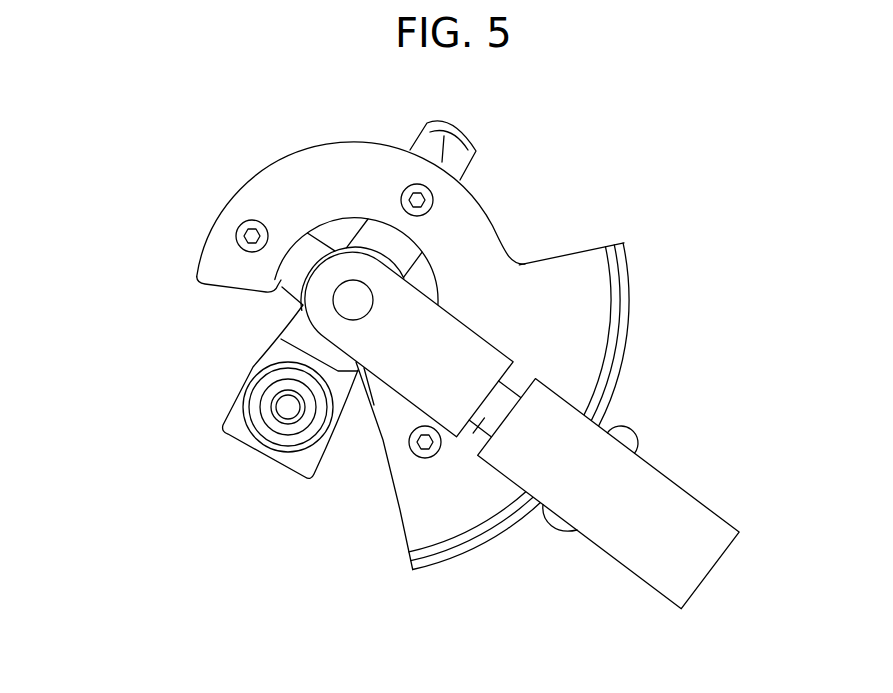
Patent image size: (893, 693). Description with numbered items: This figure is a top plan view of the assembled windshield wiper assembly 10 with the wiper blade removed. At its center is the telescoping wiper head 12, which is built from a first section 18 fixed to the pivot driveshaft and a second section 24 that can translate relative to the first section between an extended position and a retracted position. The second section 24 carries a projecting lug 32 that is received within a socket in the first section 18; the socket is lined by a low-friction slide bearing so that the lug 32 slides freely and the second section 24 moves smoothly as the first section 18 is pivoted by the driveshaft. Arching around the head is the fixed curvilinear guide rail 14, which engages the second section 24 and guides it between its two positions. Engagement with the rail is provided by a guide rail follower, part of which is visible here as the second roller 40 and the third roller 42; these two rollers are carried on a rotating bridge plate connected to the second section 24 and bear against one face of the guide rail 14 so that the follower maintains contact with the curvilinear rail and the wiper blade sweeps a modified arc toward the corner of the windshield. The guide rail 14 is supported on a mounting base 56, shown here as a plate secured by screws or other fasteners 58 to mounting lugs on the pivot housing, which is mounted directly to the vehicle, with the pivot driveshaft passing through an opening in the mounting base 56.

The windshield wiper assembly 10 is at (409, 356).
The telescoping wiper head 12 is at (588, 302).
The fixed guide rail 14 is at (628, 338).
The first section 18 is at (412, 390).
The second section 24 is at (665, 500).
The projecting lug 32 is at (483, 432).
The second roller 40 is at (625, 433).
The third roller 42 is at (557, 533).
The mounting base 56 is at (478, 237).
The fasteners 58 is at (240, 226).